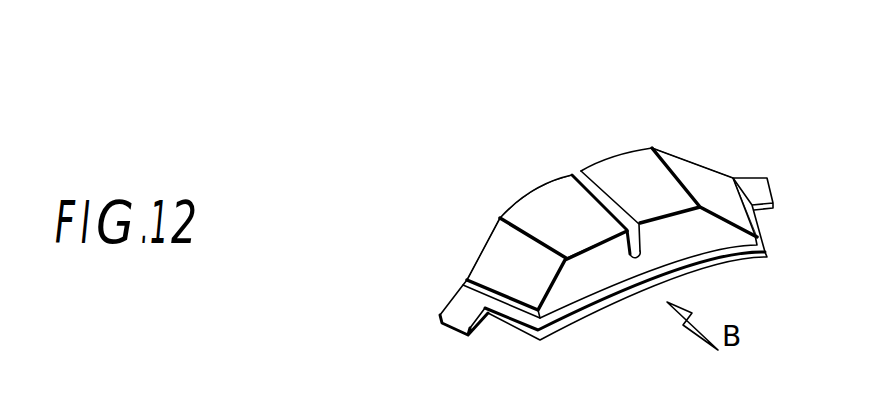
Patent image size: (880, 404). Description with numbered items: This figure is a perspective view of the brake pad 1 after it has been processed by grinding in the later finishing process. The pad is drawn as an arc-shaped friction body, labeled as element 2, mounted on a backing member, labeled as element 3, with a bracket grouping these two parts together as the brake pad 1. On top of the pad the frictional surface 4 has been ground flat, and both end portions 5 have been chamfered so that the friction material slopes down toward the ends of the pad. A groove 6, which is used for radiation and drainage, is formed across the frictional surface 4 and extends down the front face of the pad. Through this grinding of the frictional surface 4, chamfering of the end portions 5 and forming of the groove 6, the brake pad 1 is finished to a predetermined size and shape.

The brake pad 1 is at (353, 223).
The friction lining 2 is at (463, 282).
The backing plate 3 is at (457, 310).
The frictional surface 4 is at (537, 207).
The end portions 5 is at (488, 242).
The groove 6 is at (576, 172).